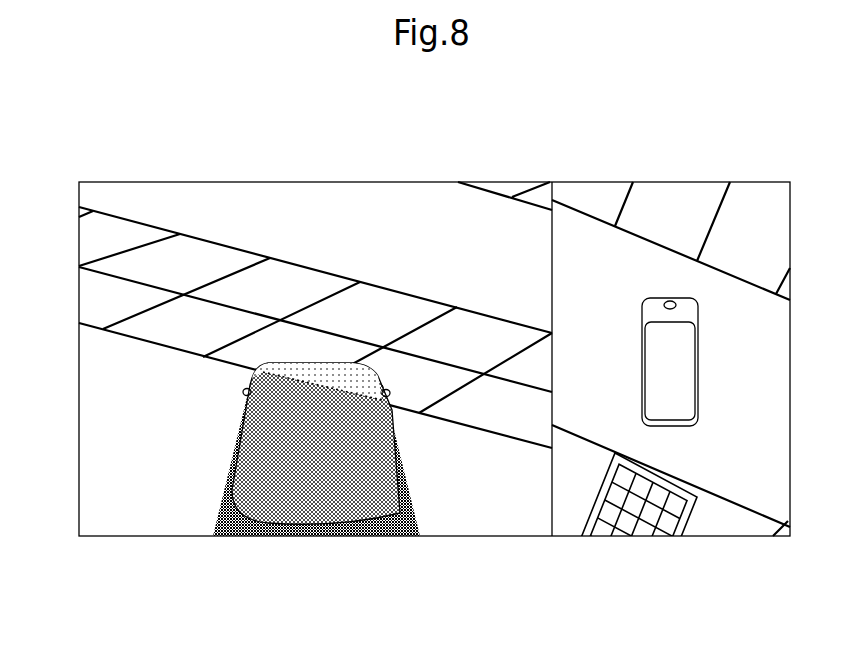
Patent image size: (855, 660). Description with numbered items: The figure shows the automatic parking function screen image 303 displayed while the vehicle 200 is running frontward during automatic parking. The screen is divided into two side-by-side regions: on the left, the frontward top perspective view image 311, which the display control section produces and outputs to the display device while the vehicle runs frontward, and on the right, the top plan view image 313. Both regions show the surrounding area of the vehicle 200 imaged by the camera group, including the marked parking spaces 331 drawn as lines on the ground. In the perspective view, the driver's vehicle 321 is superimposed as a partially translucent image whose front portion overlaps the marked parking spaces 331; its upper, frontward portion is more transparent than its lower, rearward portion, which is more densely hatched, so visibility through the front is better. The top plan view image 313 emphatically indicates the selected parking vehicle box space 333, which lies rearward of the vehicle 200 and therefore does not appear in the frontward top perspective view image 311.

The automatic parking function screen image 303 is at (113, 137).
The frontward top perspective view image 311 is at (552, 552).
The top plan view image 313 is at (790, 552).
The driver's vehicle 321 is at (310, 372).
The vehicle 200 is at (316, 329).
The marked parking spaces 331 is at (430, 413).
The selected parking vehicle box space 333 is at (668, 497).